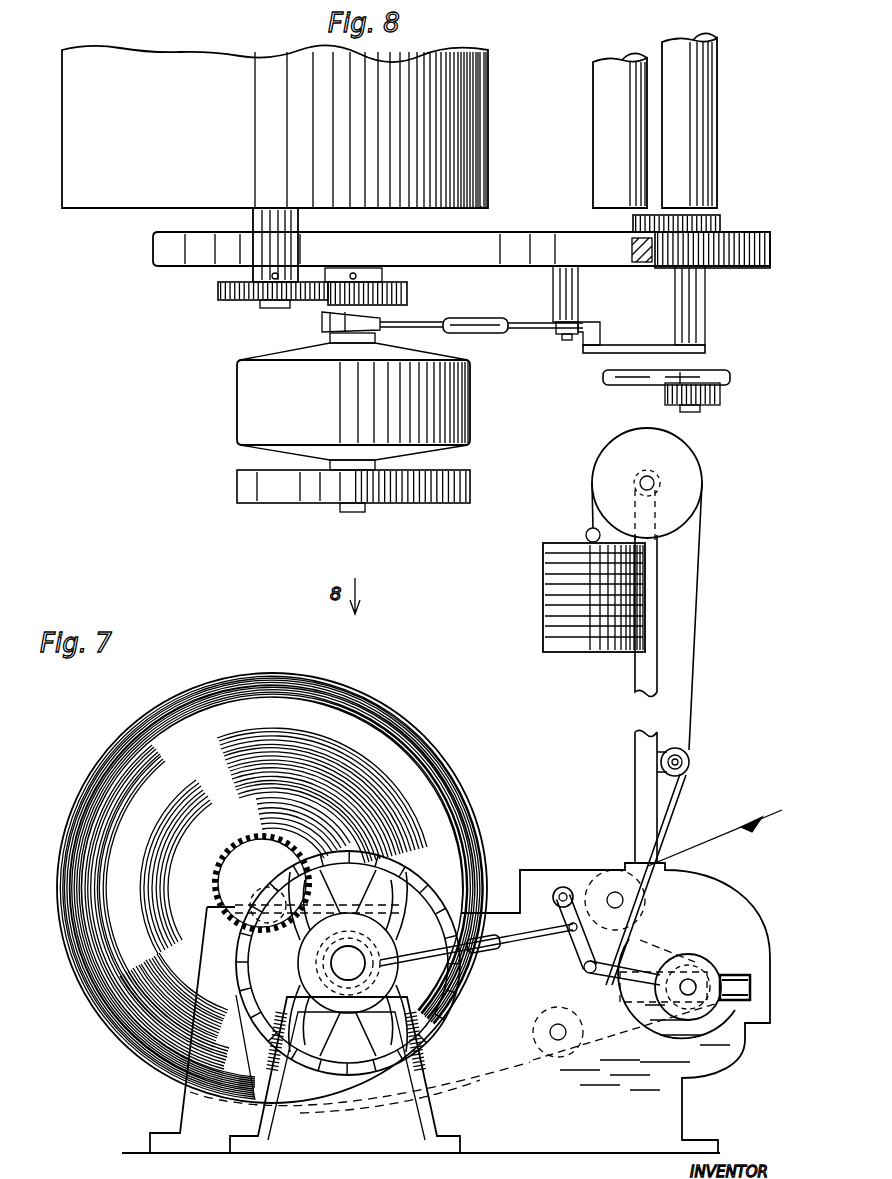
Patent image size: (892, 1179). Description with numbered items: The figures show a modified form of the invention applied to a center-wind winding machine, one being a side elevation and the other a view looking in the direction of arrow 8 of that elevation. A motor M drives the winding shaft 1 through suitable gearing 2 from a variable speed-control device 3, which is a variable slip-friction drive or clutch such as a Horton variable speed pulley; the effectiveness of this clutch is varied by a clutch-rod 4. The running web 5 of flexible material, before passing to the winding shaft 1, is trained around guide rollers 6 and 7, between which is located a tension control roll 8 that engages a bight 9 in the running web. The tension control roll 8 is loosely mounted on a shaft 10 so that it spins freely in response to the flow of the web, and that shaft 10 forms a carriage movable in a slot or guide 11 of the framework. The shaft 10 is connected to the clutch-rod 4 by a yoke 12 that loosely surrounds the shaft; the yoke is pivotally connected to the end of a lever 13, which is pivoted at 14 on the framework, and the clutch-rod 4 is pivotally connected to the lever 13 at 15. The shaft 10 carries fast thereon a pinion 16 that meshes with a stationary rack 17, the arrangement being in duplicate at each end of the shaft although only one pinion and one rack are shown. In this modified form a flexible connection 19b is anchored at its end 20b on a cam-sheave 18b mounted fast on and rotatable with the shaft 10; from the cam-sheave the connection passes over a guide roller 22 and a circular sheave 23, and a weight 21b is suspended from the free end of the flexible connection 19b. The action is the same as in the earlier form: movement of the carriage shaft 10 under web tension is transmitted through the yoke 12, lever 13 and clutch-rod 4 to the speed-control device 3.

In FIG. 8, the motor M is at (275, 126).
In FIG. 7, the motor M is at (183, 698).
In FIG. 8, the winding shaft 1 is at (265, 305).
In FIG. 7, the winding shaft 1 is at (250, 893).
In FIG. 8, the gearing 2 is at (306, 306).
In FIG. 7, the gearing 2 is at (250, 848).
In FIG. 8, the variable speed-control device 3 is at (250, 388).
In FIG. 7, the variable speed-control device 3 is at (420, 877).
In FIG. 8, the clutch-rod 4 is at (462, 318).
In FIG. 7, the clutch-rod 4 is at (525, 938).
In FIG. 7, the running web 5 is at (708, 840).
In FIG. 7, the guide roller 6 is at (612, 870).
In FIG. 8, the guide roller 7 is at (593, 138).
In FIG. 7, the guide roller 7 is at (545, 1022).
In FIG. 8, the tension control roll 8 is at (700, 128).
In FIG. 7, the tension control roll 8 is at (703, 975).
In FIG. 7, the bight 9 is at (648, 938).
In FIG. 8, the shaft 10 is at (700, 406).
In FIG. 7, the shaft 10 is at (703, 1003).
In FIG. 7, the slot or guide 11 is at (750, 993).
In FIG. 8, the yoke 12 is at (655, 340).
In FIG. 7, the yoke 12 is at (595, 978).
In FIG. 8, the lever 13 is at (597, 332).
In FIG. 7, the lever 13 is at (577, 957).
In FIG. 8, the pivot 14 is at (565, 343).
In FIG. 7, the pivot 14 is at (563, 885).
In FIG. 7, the pivotal connection 15 is at (571, 930).
In FIG. 8, the pinion 16 is at (692, 213).
In FIG. 8, the stationary rack 17 is at (750, 217).
In FIG. 8, the cam-sheave 18b is at (630, 388).
In FIG. 7, the cam-sheave 18b is at (655, 1043).
In FIG. 7, the flexible connection 19b is at (690, 712).
In FIG. 7, the drum 20b is at (655, 990).
In FIG. 7, the weight 21b is at (543, 637).
In FIG. 7, the guide roller 22 is at (690, 762).
In FIG. 7, the circular sheave 23 is at (697, 470).